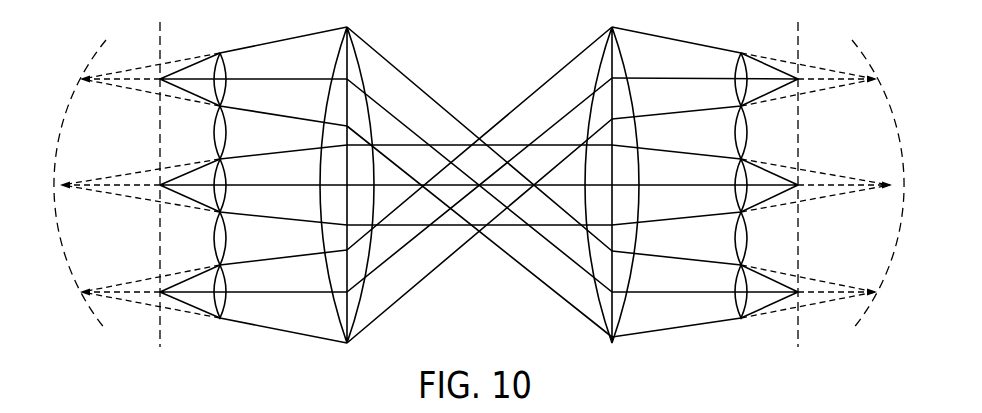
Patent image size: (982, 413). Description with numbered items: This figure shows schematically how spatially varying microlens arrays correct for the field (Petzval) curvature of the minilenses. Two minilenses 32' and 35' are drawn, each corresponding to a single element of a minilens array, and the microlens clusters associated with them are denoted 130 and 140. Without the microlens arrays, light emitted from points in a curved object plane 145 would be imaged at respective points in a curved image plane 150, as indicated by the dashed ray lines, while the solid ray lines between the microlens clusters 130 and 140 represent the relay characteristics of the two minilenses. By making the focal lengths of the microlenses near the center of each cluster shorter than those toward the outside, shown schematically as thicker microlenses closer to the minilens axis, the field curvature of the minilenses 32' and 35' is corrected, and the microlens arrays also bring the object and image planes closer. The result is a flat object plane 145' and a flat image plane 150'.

The curved object plane 145 is at (73, 178).
The flat object plane 145' is at (178, 173).
The microlens cluster 130 is at (219, 52).
The minilens 32' is at (360, 171).
The minilens 35' is at (605, 171).
The microlens cluster 140 is at (742, 52).
The flat image plane 150' is at (818, 179).
The curved image plane 150 is at (882, 171).